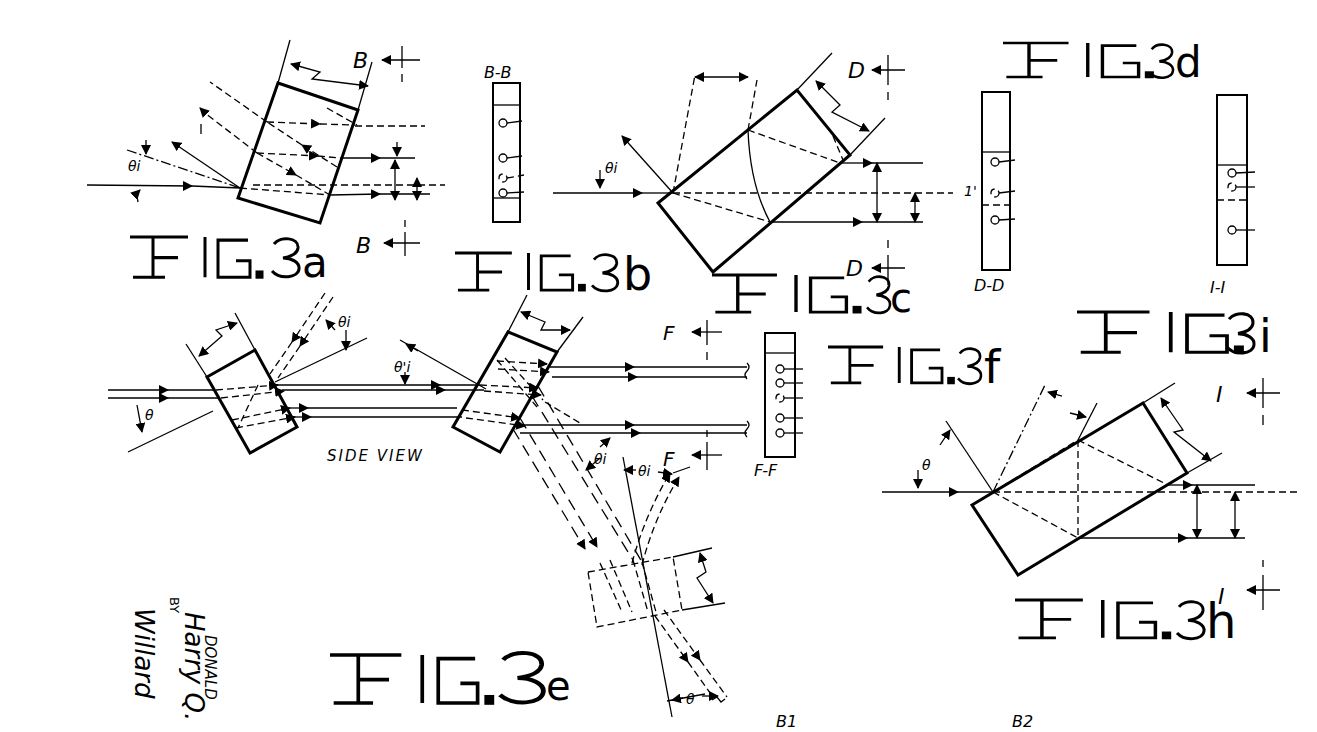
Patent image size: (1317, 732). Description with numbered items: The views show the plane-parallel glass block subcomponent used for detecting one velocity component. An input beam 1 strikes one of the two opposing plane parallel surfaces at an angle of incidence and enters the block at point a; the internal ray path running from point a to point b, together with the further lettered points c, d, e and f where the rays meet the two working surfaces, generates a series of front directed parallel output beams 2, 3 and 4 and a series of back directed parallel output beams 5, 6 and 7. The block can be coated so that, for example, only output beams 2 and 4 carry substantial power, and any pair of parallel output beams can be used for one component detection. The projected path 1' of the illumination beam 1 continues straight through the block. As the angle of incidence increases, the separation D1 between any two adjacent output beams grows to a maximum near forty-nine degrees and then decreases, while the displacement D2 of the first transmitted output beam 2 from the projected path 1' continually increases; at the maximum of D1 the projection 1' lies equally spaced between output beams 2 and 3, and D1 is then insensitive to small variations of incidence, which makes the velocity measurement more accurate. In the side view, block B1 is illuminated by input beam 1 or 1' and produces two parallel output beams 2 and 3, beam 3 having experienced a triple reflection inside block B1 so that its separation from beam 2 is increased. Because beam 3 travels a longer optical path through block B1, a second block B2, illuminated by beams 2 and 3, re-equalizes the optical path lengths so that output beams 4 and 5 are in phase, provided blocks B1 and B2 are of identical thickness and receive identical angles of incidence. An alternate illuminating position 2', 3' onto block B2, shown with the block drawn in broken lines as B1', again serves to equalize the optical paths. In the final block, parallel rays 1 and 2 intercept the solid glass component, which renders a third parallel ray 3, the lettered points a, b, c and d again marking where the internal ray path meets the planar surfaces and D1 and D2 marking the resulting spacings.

In FIG. 3A, the input beam 1 is at (162, 192).
In FIG. 3B, the input beam 1 is at (517, 176).
In FIG. 3C, the input beam 1 is at (611, 204).
In FIG. 3D, the input beam 1 is at (1010, 192).
In FIG. 3I, the input beam 1 is at (1248, 188).
In FIG. 3F, the input beam 1 is at (797, 398).
In FIG. 3H, the input beam 1 is at (930, 483).
In FIG. 3E, the input beam 1 is at (163, 402).
In FIG. 3A, the projected path of the input beam 1' is at (361, 184).
In FIG. 3C, the projected path of the input beam 1' is at (823, 193).
In FIG. 3E, the projected path of the input beam 1' is at (301, 335).
In FIG. 3A, the first transmitted output beam 2 is at (386, 195).
In FIG. 3B, the first transmitted output beam 2 is at (517, 193).
In FIG. 3C, the first transmitted output beam 2 is at (853, 222).
In FIG. 3D, the first transmitted output beam 2 is at (1009, 221).
In FIG. 3I, the first transmitted output beam 2 is at (1247, 231).
In FIG. 3F, the first transmitted output beam 2 is at (797, 383).
In FIG. 3H, the first transmitted output beam 2 is at (1168, 540).
In FIG. 3E, the first transmitted output beam 2 is at (379, 398).
In FIG. 3E, the alternate illuminating beam position 2' is at (594, 499).
In FIG. 3A, the second front directed output beam 3 is at (387, 155).
In FIG. 3B, the second front directed output beam 3 is at (516, 156).
In FIG. 3C, the second front directed output beam 3 is at (888, 163).
In FIG. 3D, the second front directed output beam 3 is at (1009, 161).
In FIG. 3I, the second front directed output beam 3 is at (1247, 173).
In FIG. 3F, the second front directed output beam 3 is at (797, 418).
In FIG. 3H, the second front directed output beam 3 is at (1218, 485).
In FIG. 3E, the second front directed output beam 3 is at (376, 423).
In FIG. 3E, the alternate illuminating beam position 3' is at (572, 515).
In FIG. 3A, the third front directed output beam 4 is at (397, 126).
In FIG. 3B, the third front directed output beam 4 is at (516, 123).
In FIG. 3F, the third front directed output beam 4 is at (797, 368).
In FIG. 3E, the third front directed output beam 4 is at (618, 366).
In FIG. 3A, the back directed output beam 5 is at (197, 157).
In FIG. 3C, the back directed output beam 5 is at (685, 120).
In FIG. 3F, the back directed output beam 5 is at (797, 433).
In FIG. 3E, the back directed output beam 5 is at (642, 428).
In FIG. 3A, the back directed output beam 6 is at (214, 126).
In FIG. 3C, the back directed output beam 6 is at (757, 96).
In FIG. 3A, the back directed output beam 7 is at (232, 96).
In FIG. 3A, the internal ray path end point a is at (233, 193).
In FIG. 3C, the internal ray path end point a is at (652, 181).
In FIG. 3H, the internal ray path end point a is at (967, 479).
In FIG. 3A, the internal ray path end point b is at (340, 202).
In FIG. 3C, the internal ray path end point b is at (774, 234).
In FIG. 3H, the internal ray path end point b is at (1084, 551).
In FIG. 3A, the working surface point c is at (253, 145).
In FIG. 3C, the working surface point c is at (737, 123).
In FIG. 3H, the working surface point c is at (1068, 431).
In FIG. 3A, the exit point on rear surface d is at (347, 174).
In FIG. 3C, the exit point on rear surface d is at (844, 175).
In FIG. 3H, the exit point on rear surface d is at (1162, 501).
In FIG. 3A, the internal reflection point on front surface e is at (263, 112).
In FIG. 3A, the working surface point f is at (363, 120).
In FIG. 3E, the first glass block B1 is at (252, 424).
In FIG. 3E, the beam splitter plate in alternate position B1' is at (619, 593).
In FIG. 3E, the second glass block B2 is at (494, 457).
In FIG. 3A, the output beam separation D1 is at (292, 174).
In FIG. 3C, the output beam separation D1 is at (789, 156).
In FIG. 3H, the output beam separation D1 is at (1106, 482).
In FIG. 3A, the output beam displacement D2 is at (420, 205).
In FIG. 3C, the output beam displacement D2 is at (917, 223).
In FIG. 3H, the output beam displacement D2 is at (1232, 538).